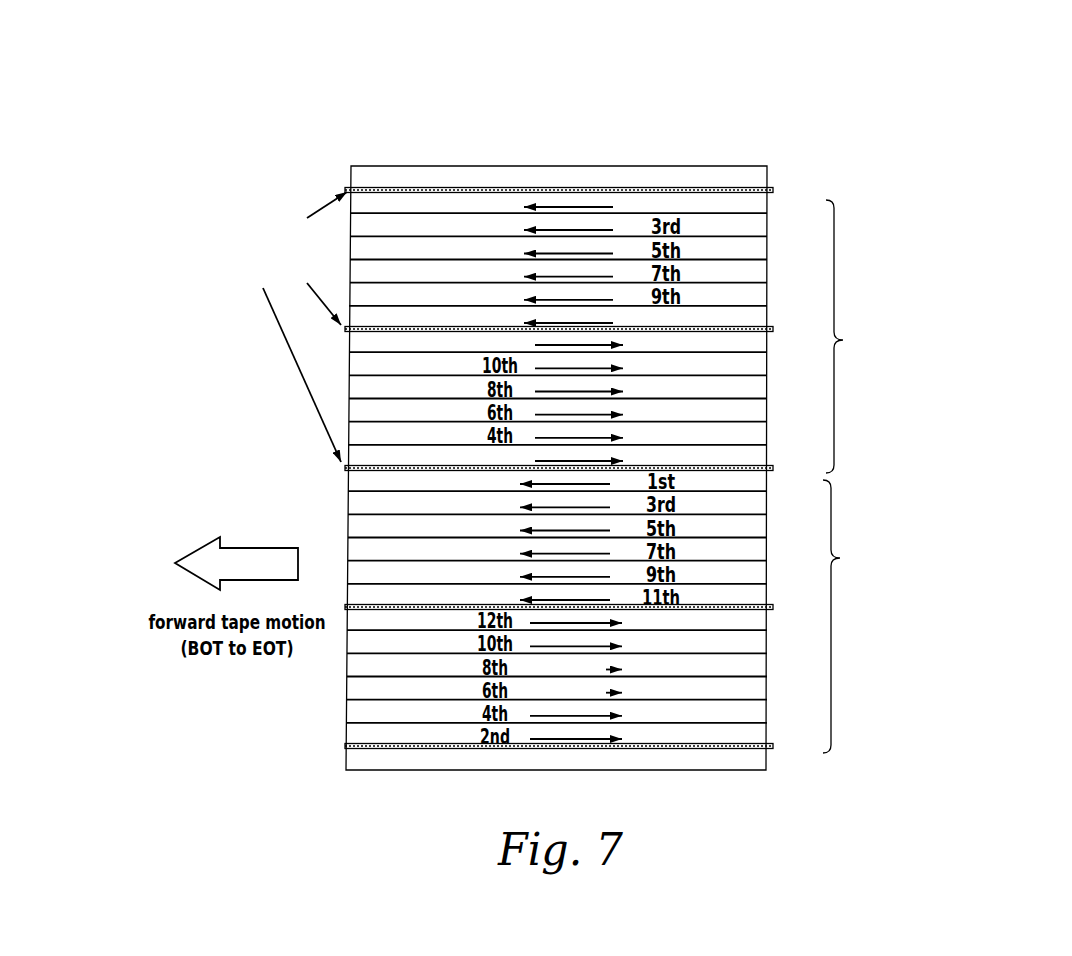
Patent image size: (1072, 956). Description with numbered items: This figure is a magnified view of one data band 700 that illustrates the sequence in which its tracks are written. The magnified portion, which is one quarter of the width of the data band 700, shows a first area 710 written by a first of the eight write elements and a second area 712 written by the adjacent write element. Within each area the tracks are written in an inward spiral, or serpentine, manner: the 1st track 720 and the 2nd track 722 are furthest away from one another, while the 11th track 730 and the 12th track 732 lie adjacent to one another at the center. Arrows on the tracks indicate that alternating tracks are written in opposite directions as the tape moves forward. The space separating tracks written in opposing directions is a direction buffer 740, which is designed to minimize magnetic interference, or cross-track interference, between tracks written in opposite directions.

The data band 700 is at (273, 99).
The first area 710 is at (996, 302).
The second area 712 is at (996, 515).
The 1st track 720 is at (770, 211).
The 2nd track 722 is at (768, 460).
The 11th track 730 is at (770, 323).
The 12th track 732 is at (768, 350).
The direction buffer 740 is at (128, 283).